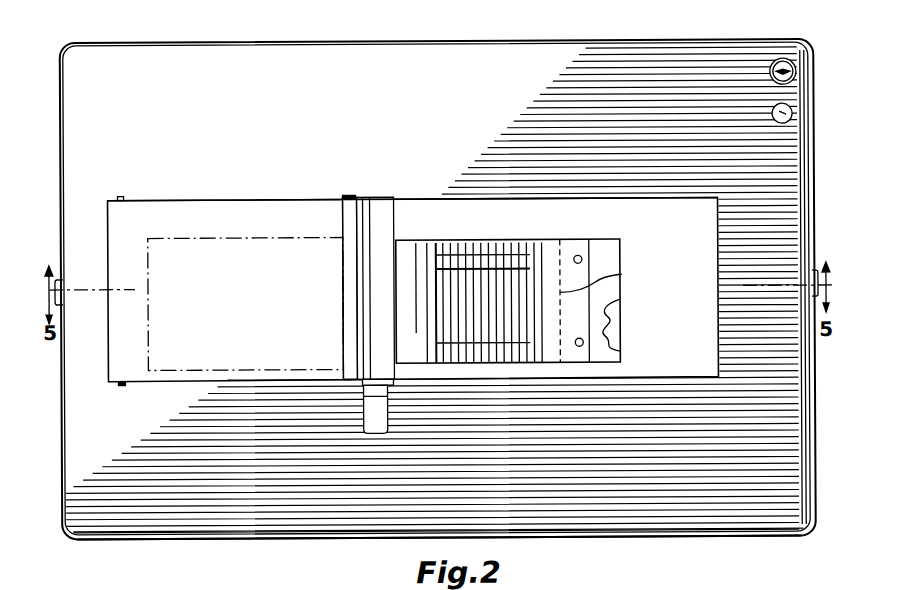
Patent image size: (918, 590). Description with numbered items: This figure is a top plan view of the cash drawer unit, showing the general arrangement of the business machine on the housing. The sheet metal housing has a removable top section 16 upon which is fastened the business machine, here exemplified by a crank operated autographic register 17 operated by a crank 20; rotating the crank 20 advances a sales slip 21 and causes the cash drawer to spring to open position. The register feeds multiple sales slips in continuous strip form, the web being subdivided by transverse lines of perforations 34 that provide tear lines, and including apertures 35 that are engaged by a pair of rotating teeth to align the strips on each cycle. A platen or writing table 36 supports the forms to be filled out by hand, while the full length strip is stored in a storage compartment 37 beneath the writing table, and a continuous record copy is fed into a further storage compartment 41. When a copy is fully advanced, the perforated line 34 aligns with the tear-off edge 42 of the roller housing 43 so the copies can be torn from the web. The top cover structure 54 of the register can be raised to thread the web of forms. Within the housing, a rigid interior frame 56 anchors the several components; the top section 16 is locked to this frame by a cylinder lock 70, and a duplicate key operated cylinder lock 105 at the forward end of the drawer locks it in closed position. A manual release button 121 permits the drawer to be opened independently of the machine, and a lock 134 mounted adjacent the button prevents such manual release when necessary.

The removable top section 16 is at (622, 72).
The lock 134 is at (784, 60).
The manual release button 121 is at (793, 108).
The storage compartment 41 is at (204, 225).
The top cover structure 54 is at (257, 218).
The tear-off edge 42 is at (343, 218).
The roller housing 43 is at (382, 200).
The sales slip 21 is at (421, 252).
The crank operated autographic register 17 is at (438, 192).
The storage compartment of the machine 37 is at (500, 215).
The apertures 35 is at (578, 256).
The transverse lines of perforations 34 is at (622, 275).
The platen or writing table 36 is at (612, 326).
The key operated cylinder lock 105 is at (815, 272).
The cylinder lock 70 is at (62, 295).
The crank 20 is at (362, 405).
The interior frame 56 is at (266, 542).